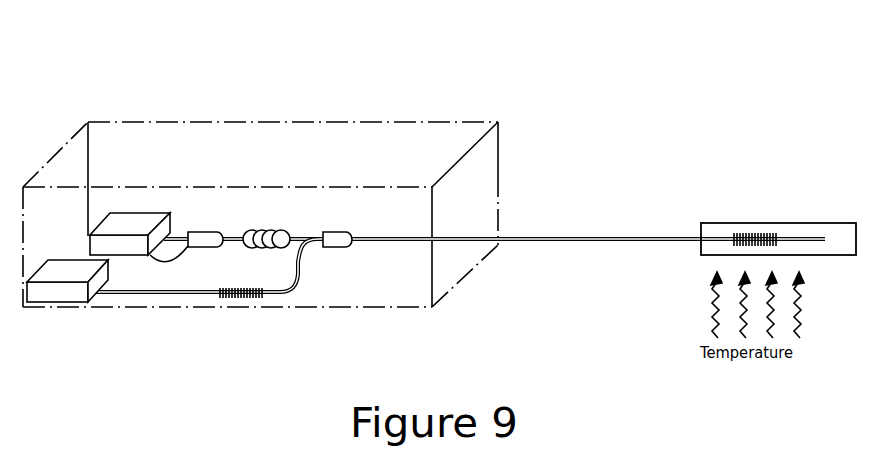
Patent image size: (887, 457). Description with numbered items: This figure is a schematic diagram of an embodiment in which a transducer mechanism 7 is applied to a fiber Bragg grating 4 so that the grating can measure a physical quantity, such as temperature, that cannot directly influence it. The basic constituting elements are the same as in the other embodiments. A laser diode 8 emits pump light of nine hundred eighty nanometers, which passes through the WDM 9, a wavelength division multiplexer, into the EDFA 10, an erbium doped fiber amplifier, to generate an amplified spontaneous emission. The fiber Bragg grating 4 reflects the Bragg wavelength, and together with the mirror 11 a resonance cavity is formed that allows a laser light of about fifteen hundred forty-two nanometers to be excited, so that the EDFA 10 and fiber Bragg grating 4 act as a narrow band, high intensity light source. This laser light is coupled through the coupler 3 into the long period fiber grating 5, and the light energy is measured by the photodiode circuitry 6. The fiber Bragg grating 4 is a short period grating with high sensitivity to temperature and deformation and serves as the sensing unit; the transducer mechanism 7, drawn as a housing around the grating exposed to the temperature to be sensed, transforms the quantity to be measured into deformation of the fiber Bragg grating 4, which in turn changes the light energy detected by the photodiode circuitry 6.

The coupler 3 is at (347, 226).
The fiber Bragg grating 4 is at (735, 226).
The long period fiber grating 5 is at (262, 300).
The light energy measuring photodiode circuitry 6 is at (67, 298).
The transducer mechanism 7 is at (787, 224).
The laser diode 8 is at (116, 223).
The WDM 9 is at (219, 230).
The EDFA 10 is at (283, 226).
The mirror 11 is at (160, 279).